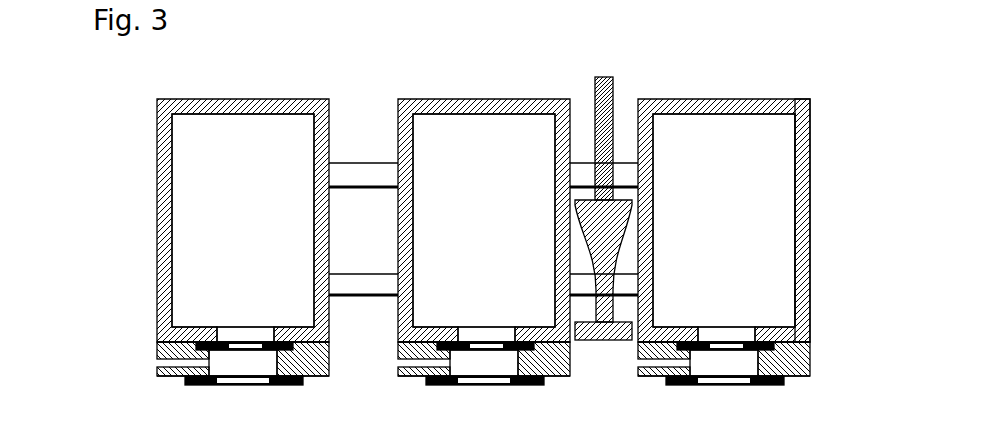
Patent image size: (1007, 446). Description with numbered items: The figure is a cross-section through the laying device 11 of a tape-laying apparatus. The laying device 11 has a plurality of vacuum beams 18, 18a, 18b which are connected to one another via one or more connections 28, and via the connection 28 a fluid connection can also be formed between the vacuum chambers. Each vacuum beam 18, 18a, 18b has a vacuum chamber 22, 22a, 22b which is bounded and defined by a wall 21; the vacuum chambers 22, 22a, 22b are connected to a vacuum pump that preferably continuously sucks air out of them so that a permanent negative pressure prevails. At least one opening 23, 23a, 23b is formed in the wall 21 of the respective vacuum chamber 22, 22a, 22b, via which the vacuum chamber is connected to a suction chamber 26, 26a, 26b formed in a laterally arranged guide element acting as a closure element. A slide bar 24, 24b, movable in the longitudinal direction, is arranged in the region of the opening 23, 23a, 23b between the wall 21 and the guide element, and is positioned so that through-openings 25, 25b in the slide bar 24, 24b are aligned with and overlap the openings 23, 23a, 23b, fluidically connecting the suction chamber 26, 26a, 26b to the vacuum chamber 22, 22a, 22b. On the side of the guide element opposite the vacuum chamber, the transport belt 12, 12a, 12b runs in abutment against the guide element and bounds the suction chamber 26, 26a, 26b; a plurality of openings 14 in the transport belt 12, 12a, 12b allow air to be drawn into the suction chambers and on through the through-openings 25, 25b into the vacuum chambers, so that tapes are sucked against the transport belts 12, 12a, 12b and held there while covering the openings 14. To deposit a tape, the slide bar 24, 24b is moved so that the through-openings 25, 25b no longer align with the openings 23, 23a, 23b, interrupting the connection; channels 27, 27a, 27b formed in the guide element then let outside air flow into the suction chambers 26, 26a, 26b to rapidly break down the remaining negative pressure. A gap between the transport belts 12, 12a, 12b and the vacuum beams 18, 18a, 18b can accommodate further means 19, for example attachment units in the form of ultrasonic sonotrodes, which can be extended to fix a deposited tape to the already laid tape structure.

The laying device 11 is at (92, 133).
The transport belt 12 is at (685, 387).
The transport belt 12a is at (441, 386).
The transport belt 12b is at (198, 386).
The openings 14 is at (233, 381).
The vacuum beam 18 is at (722, 98).
The vacuum beam 18a is at (478, 98).
The vacuum beam 18b is at (238, 98).
The further means 19 is at (604, 78).
The wall 21 is at (808, 193).
The vacuum chamber 22 is at (738, 198).
The vacuum chamber 22a is at (505, 198).
The vacuum chamber 22b is at (262, 198).
The opening 23 is at (712, 332).
The opening 23a is at (470, 332).
The opening 23b is at (265, 298).
The slide bar 24 is at (778, 339).
The slide bar 24b is at (157, 346).
The through-opening 25 is at (737, 345).
The through-opening 25b is at (233, 346).
The suction chamber 26 is at (730, 365).
The suction chamber 26a is at (493, 364).
The suction chamber 26b is at (263, 362).
The channel 27 is at (647, 399).
The channel 27a is at (406, 398).
The channel 27b is at (166, 398).
The connection 28 is at (342, 163).